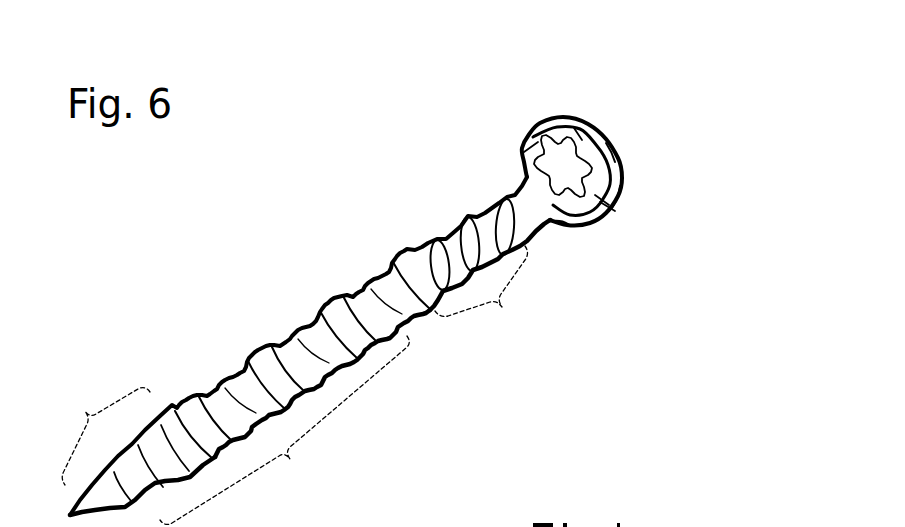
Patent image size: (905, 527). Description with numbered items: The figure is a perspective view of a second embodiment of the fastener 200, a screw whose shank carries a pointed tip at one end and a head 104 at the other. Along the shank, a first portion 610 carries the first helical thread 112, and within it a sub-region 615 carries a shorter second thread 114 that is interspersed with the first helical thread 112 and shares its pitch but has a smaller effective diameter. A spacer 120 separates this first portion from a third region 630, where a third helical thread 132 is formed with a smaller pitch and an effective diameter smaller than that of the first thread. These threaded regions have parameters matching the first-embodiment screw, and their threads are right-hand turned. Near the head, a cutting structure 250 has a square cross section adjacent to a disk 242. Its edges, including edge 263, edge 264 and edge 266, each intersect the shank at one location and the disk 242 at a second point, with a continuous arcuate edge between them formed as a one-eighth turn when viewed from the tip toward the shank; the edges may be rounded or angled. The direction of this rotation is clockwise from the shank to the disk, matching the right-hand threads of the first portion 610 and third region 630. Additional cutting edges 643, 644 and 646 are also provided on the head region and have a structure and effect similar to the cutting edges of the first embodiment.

The head 104 is at (618, 125).
The fastener 200 is at (373, 257).
The cutting structure 250 is at (477, 118).
The edge 266 is at (543, 140).
The additional cutting edge 643 is at (580, 123).
The additional cutting edge 646 is at (527, 146).
The edge 263 is at (618, 147).
The disk 242 is at (627, 173).
The additional cutting edge 644 is at (627, 205).
The edge 264 is at (577, 230).
The spacer 120 is at (383, 277).
The first helical thread 112 is at (268, 340).
The second thread 114 is at (192, 397).
The third helical thread 132 is at (430, 243).
The first portion 610 is at (295, 417).
The sub-region 615 is at (134, 448).
The third region 630 is at (490, 270).